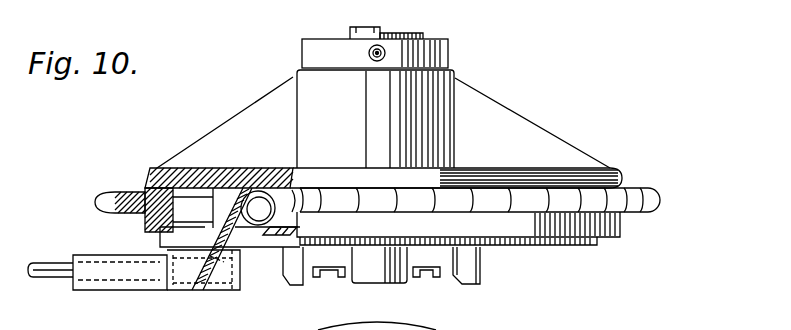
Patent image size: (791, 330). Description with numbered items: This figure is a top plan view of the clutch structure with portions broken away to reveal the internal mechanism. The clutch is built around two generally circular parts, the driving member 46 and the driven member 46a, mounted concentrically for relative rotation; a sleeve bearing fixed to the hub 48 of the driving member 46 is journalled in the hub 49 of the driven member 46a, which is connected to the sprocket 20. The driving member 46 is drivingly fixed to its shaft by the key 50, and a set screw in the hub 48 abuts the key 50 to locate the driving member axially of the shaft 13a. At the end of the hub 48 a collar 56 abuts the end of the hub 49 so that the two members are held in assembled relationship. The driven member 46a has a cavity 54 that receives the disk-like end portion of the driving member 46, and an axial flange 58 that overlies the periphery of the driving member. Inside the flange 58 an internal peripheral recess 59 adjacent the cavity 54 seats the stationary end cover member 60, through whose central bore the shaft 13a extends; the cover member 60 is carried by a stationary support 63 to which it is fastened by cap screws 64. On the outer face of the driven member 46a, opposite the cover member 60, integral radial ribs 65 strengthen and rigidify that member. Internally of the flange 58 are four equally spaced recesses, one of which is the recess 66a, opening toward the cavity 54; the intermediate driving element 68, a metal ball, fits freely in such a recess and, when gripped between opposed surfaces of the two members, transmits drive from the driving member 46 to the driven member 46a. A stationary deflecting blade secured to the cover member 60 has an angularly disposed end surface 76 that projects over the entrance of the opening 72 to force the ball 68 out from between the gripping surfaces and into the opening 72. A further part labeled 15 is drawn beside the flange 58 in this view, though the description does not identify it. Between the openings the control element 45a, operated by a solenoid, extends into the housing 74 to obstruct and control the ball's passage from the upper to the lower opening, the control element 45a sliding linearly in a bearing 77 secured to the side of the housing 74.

The key 50 is at (372, 30).
The hub 48 is at (420, 37).
The collar 56 is at (448, 53).
The hub 49 is at (455, 92).
The radial ribs 65 is at (373, 89).
The recess 66a is at (148, 178).
The driving member 46 is at (293, 172).
The sprocket 20 is at (655, 187).
The driven member 46a is at (620, 230).
The stationary end cover member 60 is at (588, 245).
The stationary support 63 is at (480, 280).
The cap screws 64 is at (330, 278).
The shaft 13a is at (372, 283).
The internal peripheral recess 59 is at (160, 240).
The axial flange 58 is at (137, 220).
The block 15 is at (178, 188).
The cavity 54 is at (193, 208).
The angularly disposed end surface 76 is at (230, 190).
The intermediate driving element 68 is at (265, 191).
The opening 72 is at (236, 262).
The housing 74 is at (215, 288).
The bearing 77 is at (150, 283).
The control element 45a is at (68, 282).